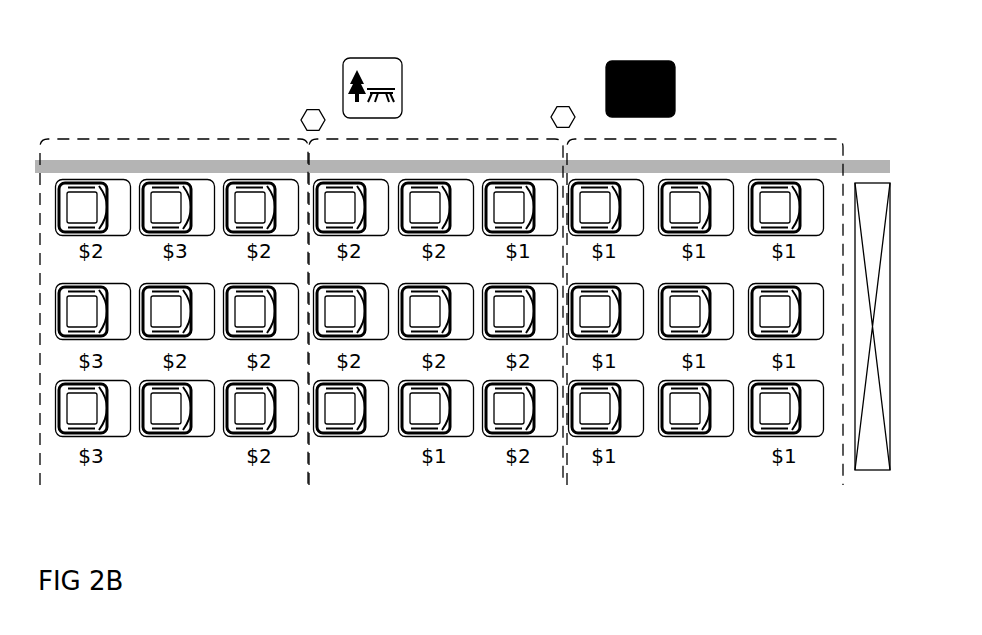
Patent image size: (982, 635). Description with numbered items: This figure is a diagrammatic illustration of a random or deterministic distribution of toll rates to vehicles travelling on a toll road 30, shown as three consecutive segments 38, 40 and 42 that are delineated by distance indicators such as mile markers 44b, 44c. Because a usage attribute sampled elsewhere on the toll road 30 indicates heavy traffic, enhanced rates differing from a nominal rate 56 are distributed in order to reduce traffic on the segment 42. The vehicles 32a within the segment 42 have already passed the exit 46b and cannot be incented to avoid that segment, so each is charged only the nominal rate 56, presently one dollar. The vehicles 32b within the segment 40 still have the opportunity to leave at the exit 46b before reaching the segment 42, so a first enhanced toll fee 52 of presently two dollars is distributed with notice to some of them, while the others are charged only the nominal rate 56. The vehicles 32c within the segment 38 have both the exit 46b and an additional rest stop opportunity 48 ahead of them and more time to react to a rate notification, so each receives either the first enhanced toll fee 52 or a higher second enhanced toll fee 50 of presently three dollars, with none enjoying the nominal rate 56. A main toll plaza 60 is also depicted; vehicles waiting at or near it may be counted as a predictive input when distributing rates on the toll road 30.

The toll road 30 is at (411, 546).
The vehicles within segment 42 32a is at (682, 432).
The vehicles within segment 40 32b is at (460, 431).
The vehicles within segment 38 32c is at (143, 431).
The segment 38 is at (184, 137).
The segment 40 is at (427, 138).
The segment 42 is at (707, 129).
The mile marker 44b is at (303, 111).
The mile marker 44c is at (551, 117).
The exit 46b is at (675, 80).
The rest stop opportunity 48 is at (343, 60).
The second enhanced toll fee 50 is at (175, 478).
The first enhanced toll fee 52 is at (350, 479).
The nominal rate 56 is at (715, 470).
The main toll plaza 60 is at (873, 470).